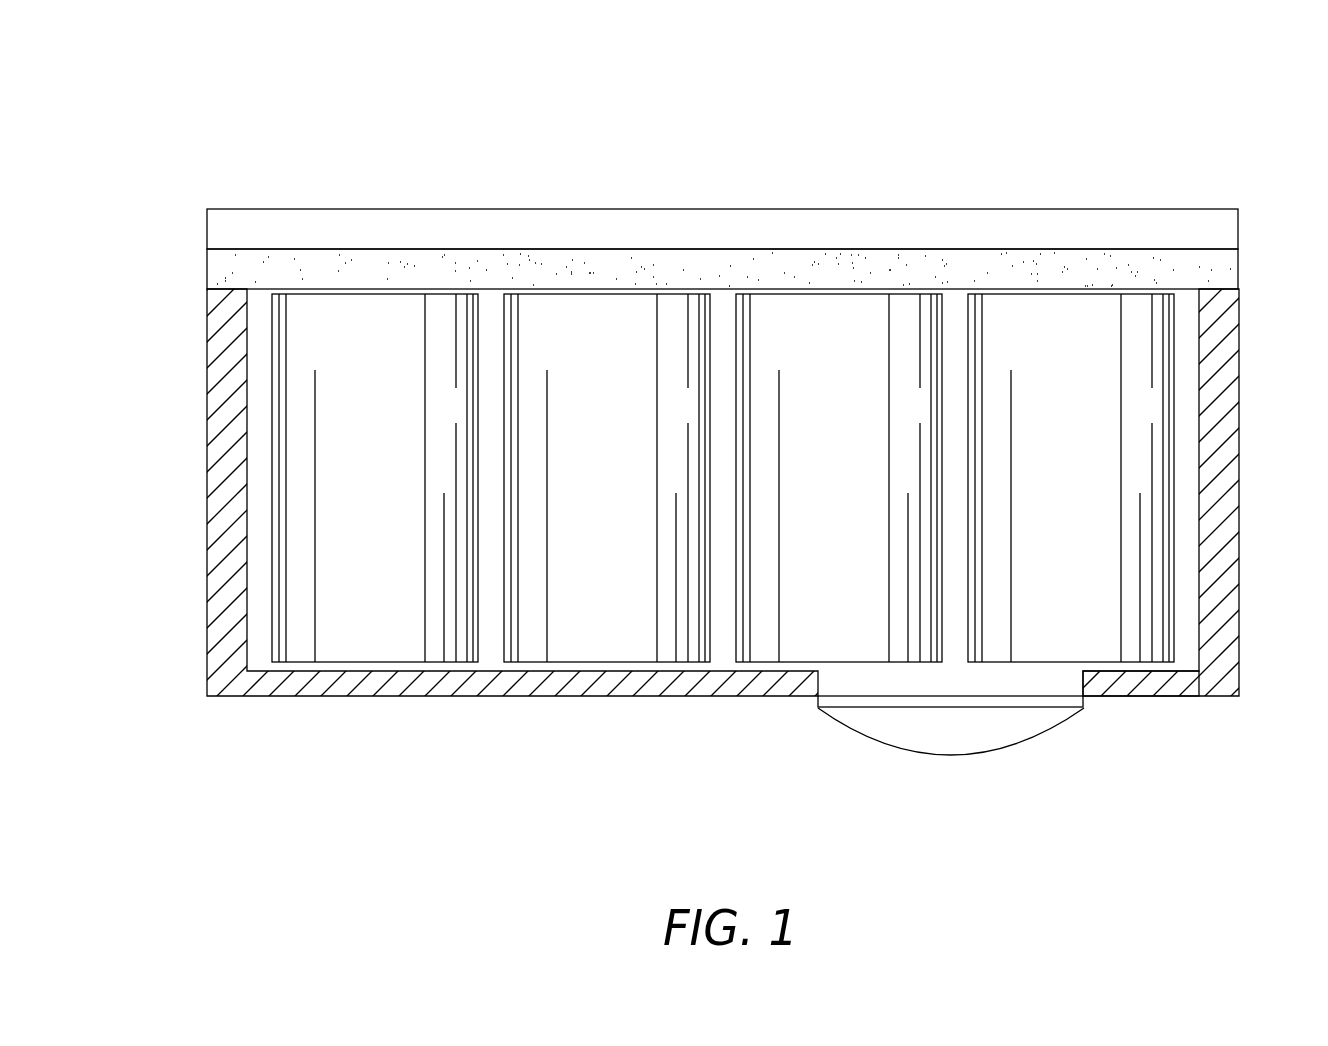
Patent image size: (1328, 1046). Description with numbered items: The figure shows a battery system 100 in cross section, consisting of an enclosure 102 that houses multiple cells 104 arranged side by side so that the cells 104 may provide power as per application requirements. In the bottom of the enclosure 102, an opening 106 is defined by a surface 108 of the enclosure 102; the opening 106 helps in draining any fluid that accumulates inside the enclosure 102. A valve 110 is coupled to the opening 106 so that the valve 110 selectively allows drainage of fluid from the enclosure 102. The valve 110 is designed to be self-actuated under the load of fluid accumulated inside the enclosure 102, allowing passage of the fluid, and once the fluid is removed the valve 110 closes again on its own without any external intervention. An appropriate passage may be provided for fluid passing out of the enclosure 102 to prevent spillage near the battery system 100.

The battery system 100 is at (1222, 108).
The enclosure 102 is at (207, 360).
The cells 104 is at (332, 492).
The opening 106 is at (1023, 697).
The surface 108 is at (1100, 697).
The valve 110 is at (978, 755).